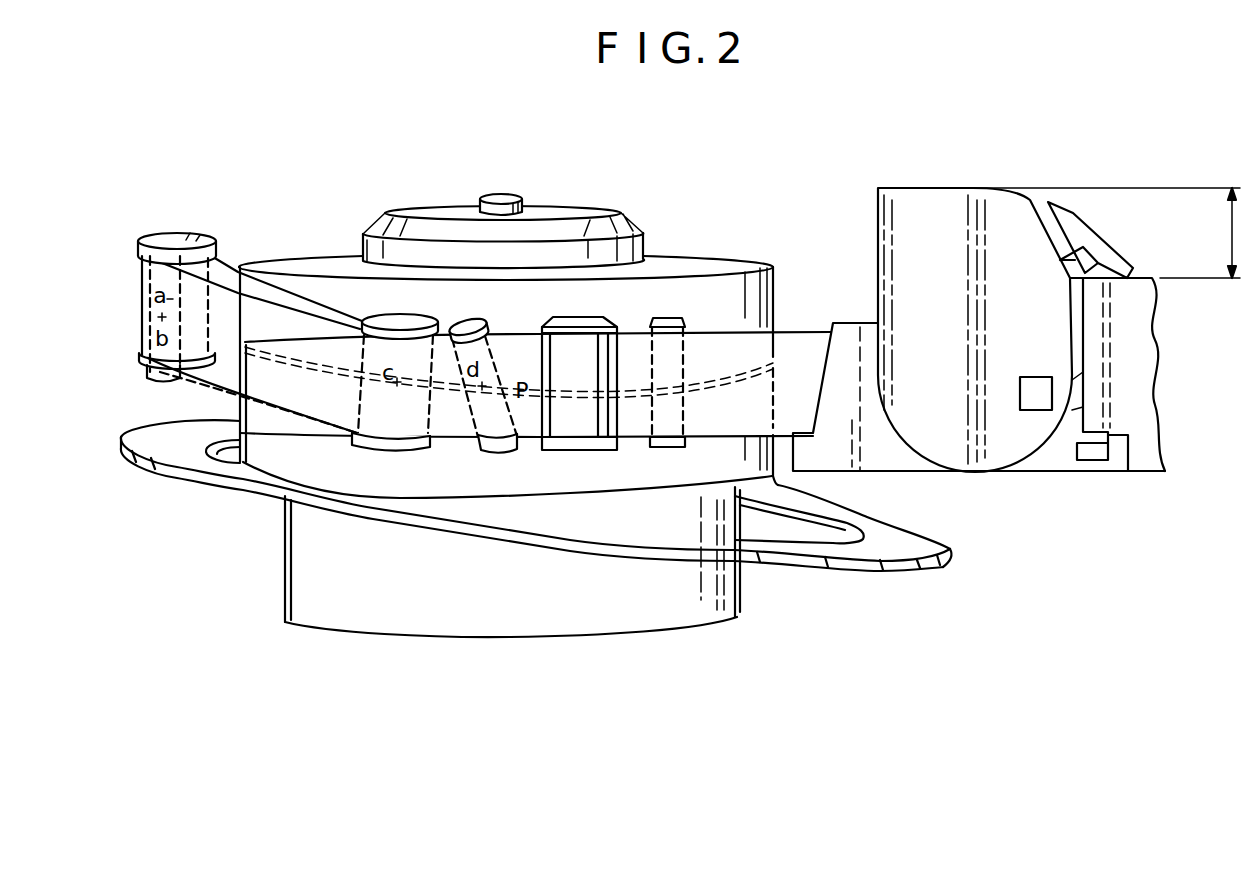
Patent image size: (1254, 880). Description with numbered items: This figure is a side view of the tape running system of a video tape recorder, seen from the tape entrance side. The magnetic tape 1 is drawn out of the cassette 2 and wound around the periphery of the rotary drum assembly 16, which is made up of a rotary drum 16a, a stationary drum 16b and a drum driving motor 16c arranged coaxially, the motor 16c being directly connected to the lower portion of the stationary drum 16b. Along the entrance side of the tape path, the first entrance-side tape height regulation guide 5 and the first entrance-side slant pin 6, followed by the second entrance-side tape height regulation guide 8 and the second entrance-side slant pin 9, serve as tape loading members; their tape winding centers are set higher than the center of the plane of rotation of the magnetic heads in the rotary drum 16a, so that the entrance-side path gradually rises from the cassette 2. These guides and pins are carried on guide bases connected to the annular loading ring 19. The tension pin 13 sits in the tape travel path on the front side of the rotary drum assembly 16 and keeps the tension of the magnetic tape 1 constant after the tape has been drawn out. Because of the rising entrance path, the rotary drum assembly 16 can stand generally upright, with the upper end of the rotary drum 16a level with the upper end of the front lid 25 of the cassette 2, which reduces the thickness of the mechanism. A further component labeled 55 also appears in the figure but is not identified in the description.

The magnetic tape 1 is at (797, 356).
The cassette 2 is at (1142, 453).
The first entrance-side tape height regulation guide 5 is at (153, 236).
The first entrance-side slant pin 6 is at (150, 279).
The second entrance-side tape height regulation guide 8 is at (377, 316).
The second entrance-side slant pin 9 is at (475, 320).
The tension pin 13 is at (673, 326).
The rotary drum assembly 16 is at (338, 652).
The rotary drum 16a is at (713, 258).
The stationary drum 16b is at (687, 470).
The drum driving motor 16c is at (522, 592).
The annular loading ring 19 is at (904, 543).
The front lid 25 is at (933, 232).
The guide block 55 is at (580, 353).